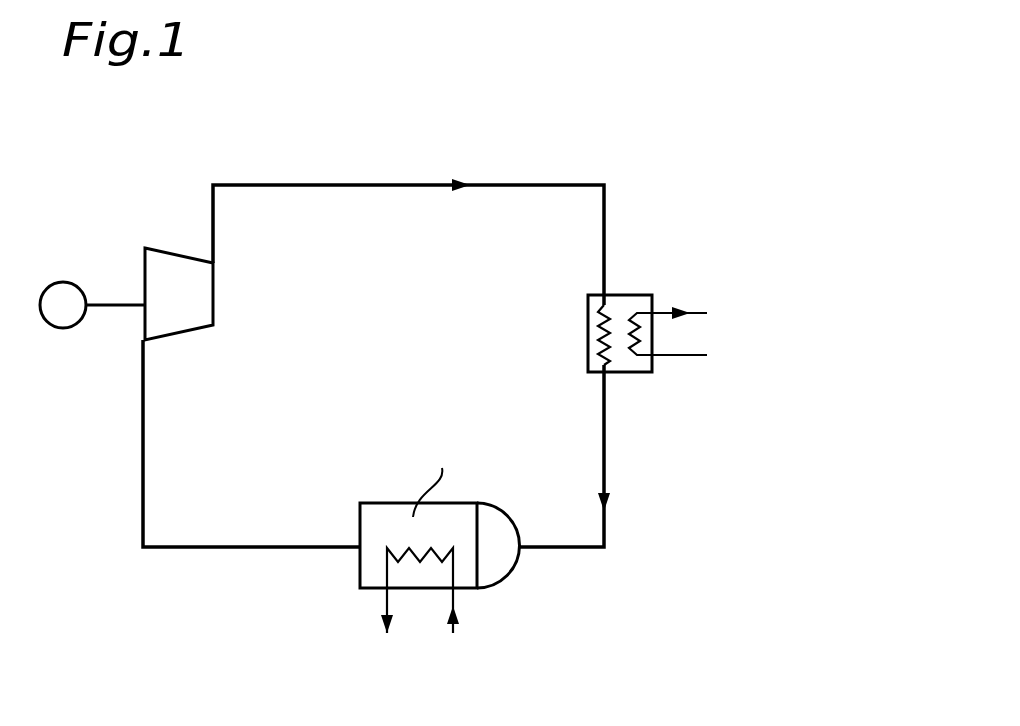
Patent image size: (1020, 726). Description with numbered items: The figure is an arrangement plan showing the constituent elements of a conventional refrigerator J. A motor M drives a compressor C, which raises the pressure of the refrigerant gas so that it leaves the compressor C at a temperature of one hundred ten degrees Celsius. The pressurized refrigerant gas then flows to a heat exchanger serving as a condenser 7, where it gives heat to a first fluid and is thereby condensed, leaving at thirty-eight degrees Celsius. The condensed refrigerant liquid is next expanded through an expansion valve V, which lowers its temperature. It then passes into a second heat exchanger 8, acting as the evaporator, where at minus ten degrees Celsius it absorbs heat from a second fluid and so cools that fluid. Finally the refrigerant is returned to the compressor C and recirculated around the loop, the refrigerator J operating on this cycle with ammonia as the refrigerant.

The refrigerator J is at (513, 154).
The heat exchanger (condenser) 7 is at (625, 293).
The heat exchanger 8 is at (359, 528).
The expansion valve V is at (493, 558).
The compressor C is at (207, 294).
The motor M is at (92, 305).